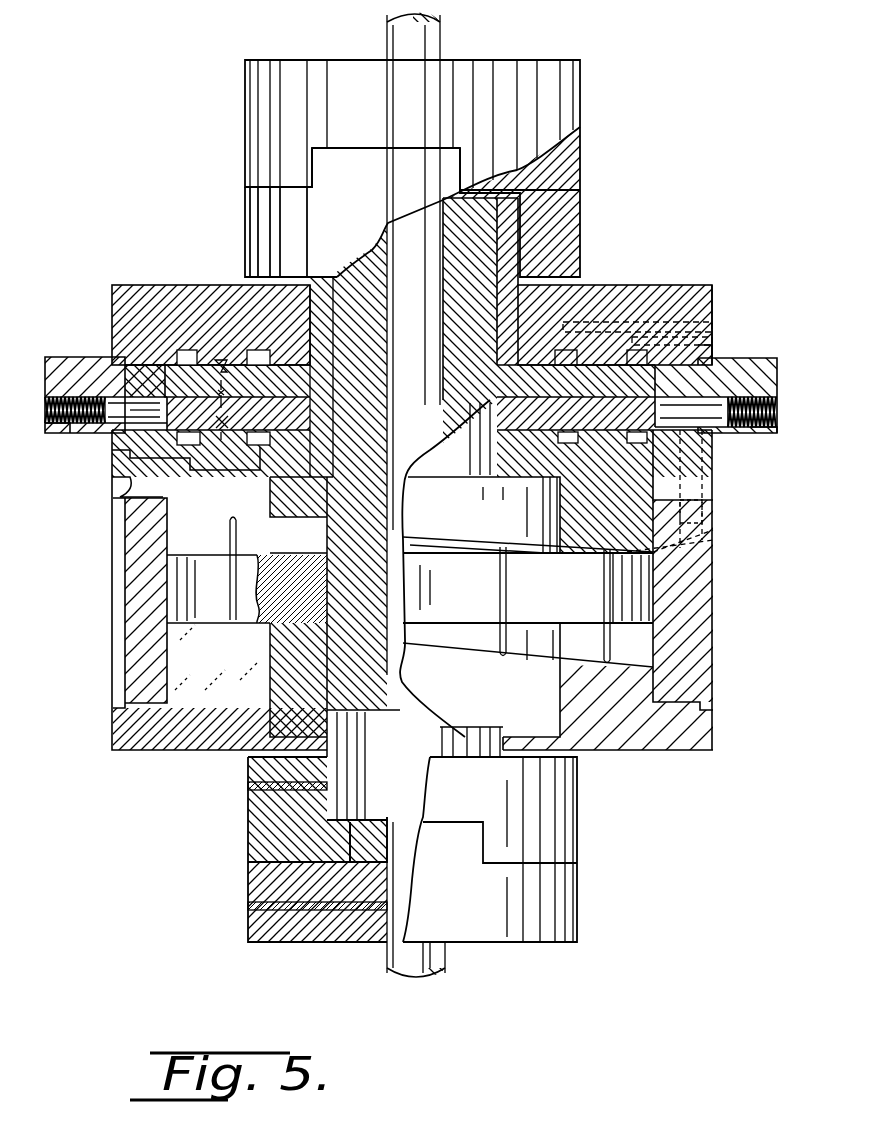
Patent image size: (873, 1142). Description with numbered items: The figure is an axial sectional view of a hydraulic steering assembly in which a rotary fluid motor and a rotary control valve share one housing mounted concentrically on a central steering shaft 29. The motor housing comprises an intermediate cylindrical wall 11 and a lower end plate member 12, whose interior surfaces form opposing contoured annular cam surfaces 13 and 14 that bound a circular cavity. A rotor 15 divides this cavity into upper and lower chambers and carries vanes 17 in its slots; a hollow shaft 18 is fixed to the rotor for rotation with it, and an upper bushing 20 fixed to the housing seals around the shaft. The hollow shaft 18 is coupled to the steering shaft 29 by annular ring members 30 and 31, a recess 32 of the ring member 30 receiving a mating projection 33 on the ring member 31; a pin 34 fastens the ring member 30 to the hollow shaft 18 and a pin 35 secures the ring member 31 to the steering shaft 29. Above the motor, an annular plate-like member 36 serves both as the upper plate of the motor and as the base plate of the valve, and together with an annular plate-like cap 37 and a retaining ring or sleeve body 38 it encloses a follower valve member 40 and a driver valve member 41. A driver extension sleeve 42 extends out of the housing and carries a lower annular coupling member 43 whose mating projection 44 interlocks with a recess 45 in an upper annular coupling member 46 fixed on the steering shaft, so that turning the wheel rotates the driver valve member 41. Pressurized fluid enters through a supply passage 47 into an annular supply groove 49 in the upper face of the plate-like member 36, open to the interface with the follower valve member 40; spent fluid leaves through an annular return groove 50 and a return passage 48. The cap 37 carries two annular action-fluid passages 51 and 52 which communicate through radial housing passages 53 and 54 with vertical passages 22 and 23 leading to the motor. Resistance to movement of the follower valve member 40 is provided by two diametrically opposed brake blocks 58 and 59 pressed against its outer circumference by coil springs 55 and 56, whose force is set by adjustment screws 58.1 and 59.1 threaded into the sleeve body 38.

The intermediate cylindrical wall 11 is at (698, 598).
The lower end plate member 12 is at (678, 738).
The cam surface 13 is at (455, 540).
The cam surface 14 is at (460, 655).
The rotor 15 is at (466, 593).
The vanes 17 is at (508, 635).
The hollow shaft 18 is at (393, 753).
The upper bushing 20 is at (303, 541).
The vertical passage 22 is at (700, 512).
The vertical passage 23 is at (690, 480).
The central steering shaft 29 is at (445, 40).
The annular ring member 30 is at (548, 822).
The annular ring member 31 is at (558, 905).
The recess 32 is at (367, 822).
The mating projection 33 is at (360, 832).
The pin 34 is at (250, 785).
The pin 35 is at (268, 895).
The annular plate-like member 36 is at (665, 460).
The annular plate-like cap 37 is at (712, 300).
The retaining ring or peripheral sleeve body 38 is at (757, 386).
The follower valve member 40 is at (305, 423).
The driver valve member 41 is at (290, 392).
The driver extension sleeve 42 is at (312, 300).
The lower annular coupling member 43 is at (268, 210).
The mating projection 44 is at (438, 168).
The recess 45 is at (313, 163).
The upper annular coupling member 46 is at (270, 122).
The supply passage 47 is at (125, 480).
The return passage 48 is at (130, 450).
The annular supply groove 49 is at (268, 446).
The annular return groove 50 is at (113, 437).
The annular action-fluid passage 51 is at (187, 350).
The annular action-fluid passage 52 is at (258, 350).
The radial housing passage 53 is at (680, 346).
The radial housing passage 54 is at (590, 322).
The coil spring 55 is at (128, 385).
The coil spring 56 is at (735, 368).
The brake block 58 is at (140, 405).
The adjustment screw 58.1 is at (65, 432).
The brake block 59 is at (690, 410).
The adjustment screw 59.1 is at (757, 432).